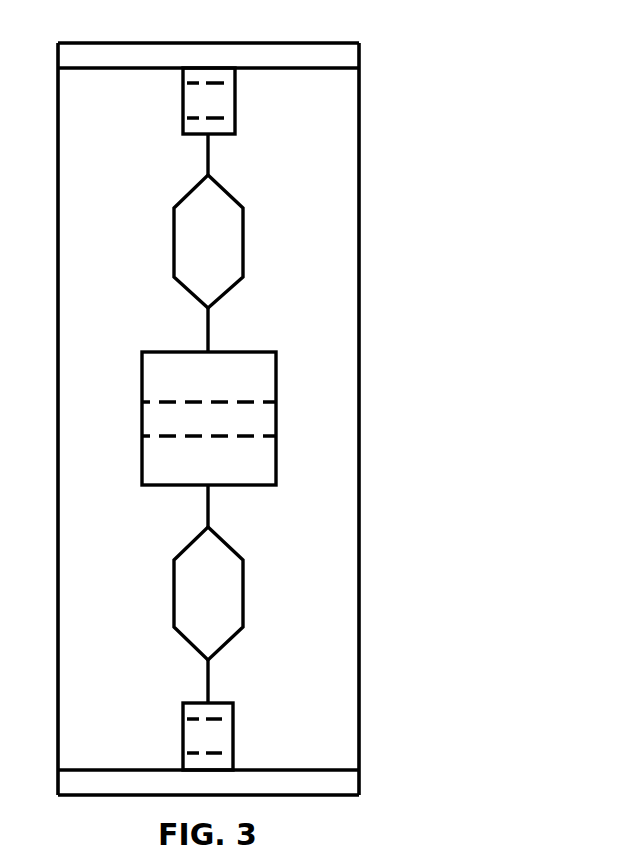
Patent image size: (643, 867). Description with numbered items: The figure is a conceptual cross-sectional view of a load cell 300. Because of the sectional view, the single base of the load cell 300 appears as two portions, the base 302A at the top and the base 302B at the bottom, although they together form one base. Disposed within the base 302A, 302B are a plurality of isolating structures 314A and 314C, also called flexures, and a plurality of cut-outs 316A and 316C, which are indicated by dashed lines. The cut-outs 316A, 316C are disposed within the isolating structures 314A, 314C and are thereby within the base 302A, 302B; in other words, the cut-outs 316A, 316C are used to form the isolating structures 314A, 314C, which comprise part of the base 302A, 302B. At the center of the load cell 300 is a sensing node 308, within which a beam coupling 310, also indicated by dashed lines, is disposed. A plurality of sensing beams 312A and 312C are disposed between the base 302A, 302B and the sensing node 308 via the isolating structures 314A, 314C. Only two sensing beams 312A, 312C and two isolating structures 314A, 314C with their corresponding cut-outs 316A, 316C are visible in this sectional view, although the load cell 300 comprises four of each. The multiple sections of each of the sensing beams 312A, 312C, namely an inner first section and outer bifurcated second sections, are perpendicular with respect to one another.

The load cell 300 is at (545, 104).
The base 302A is at (366, 45).
The base 302B is at (366, 782).
The sensing node 308 is at (281, 372).
The beam coupling 310 is at (281, 417).
The sensing beam 312A is at (259, 226).
The sensing beam 312C is at (259, 602).
The isolating structure 314A is at (241, 128).
The isolating structure 314C is at (241, 706).
The cut-out 316A is at (213, 101).
The cut-out 316C is at (212, 741).